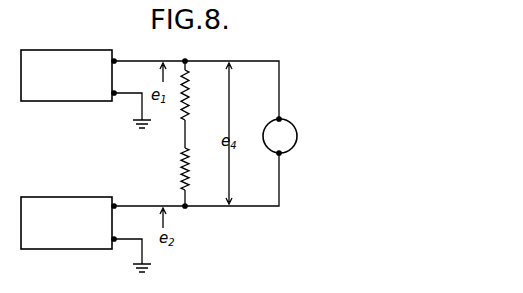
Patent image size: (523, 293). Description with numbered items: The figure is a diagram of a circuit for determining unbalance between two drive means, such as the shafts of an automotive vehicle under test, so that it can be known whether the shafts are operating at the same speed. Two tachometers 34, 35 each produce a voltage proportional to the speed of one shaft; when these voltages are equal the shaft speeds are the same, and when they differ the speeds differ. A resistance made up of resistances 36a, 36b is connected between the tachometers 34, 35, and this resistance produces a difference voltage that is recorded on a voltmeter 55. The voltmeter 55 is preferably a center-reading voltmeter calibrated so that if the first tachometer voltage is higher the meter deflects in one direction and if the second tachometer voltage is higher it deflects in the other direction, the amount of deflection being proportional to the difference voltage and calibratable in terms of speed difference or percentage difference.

The tachometer 34 is at (81, 83).
The tachometer 35 is at (80, 227).
The resistance 36a is at (196, 112).
The resistance 36b is at (188, 178).
The voltmeter 55 is at (296, 133).